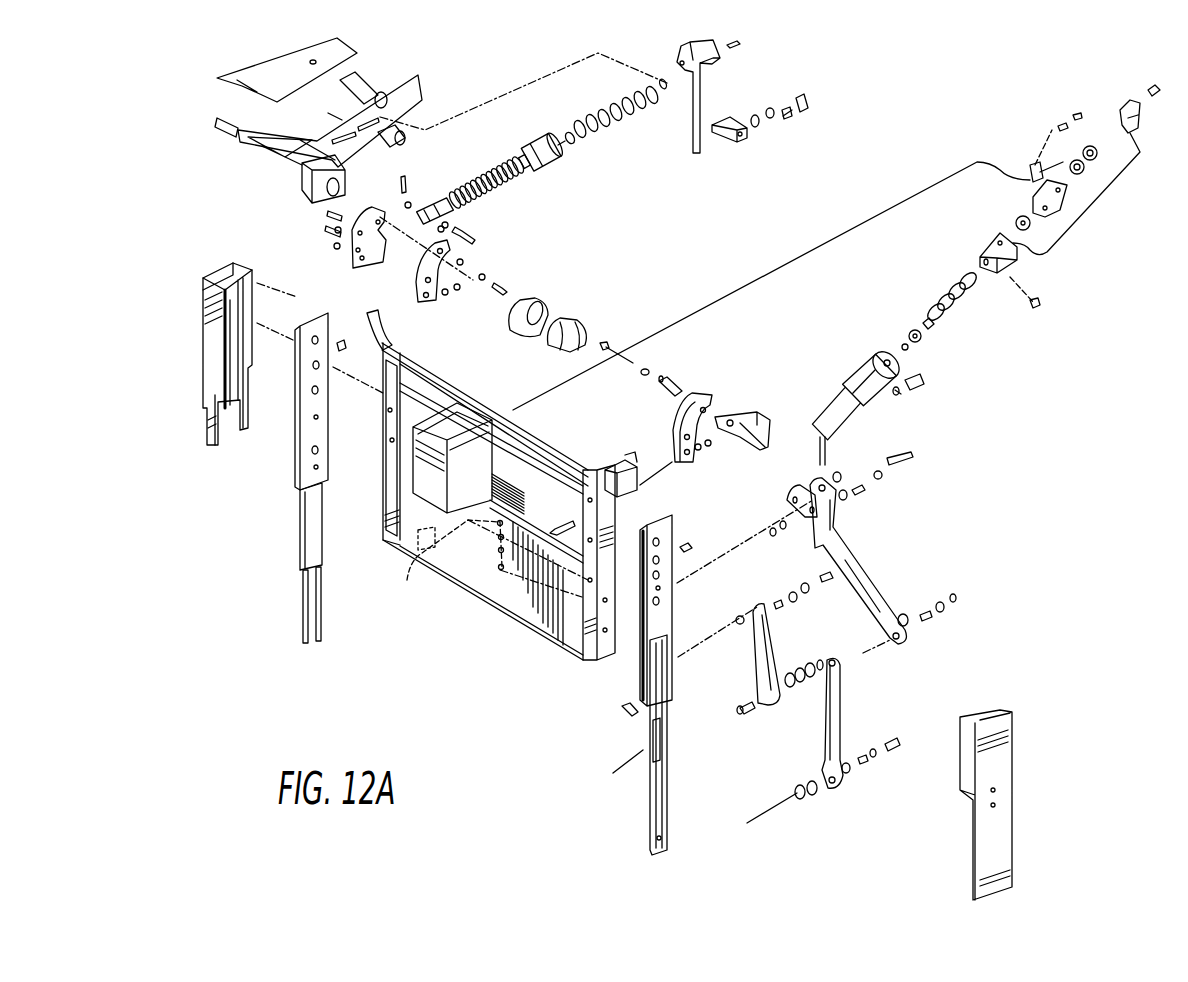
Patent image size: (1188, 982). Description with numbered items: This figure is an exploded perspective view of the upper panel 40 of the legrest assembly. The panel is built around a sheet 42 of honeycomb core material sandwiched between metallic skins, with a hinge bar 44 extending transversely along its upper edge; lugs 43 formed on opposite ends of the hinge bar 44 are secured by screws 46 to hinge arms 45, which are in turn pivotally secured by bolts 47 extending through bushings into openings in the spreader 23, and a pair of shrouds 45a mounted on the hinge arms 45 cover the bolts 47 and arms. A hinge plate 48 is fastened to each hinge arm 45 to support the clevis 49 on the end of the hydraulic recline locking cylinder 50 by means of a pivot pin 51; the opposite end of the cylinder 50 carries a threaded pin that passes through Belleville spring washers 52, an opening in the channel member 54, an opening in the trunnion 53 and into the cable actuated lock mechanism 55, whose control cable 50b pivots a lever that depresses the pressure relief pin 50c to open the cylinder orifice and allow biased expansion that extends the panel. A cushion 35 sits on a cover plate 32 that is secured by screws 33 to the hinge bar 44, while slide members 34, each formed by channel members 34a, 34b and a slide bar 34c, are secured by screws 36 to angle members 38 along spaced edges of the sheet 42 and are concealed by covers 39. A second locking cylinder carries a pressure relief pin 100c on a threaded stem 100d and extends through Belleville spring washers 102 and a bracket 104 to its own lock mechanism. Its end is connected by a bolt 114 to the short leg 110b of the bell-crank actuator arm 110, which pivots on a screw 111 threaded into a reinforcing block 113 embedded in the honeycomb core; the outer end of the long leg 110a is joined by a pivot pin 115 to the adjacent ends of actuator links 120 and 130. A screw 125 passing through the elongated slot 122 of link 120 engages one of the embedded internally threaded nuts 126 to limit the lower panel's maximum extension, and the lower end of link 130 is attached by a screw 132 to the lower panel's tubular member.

The spreader 23 is at (293, 150).
The cover plate 32 is at (397, 410).
The screws 33 is at (530, 450).
The slide members 34 is at (675, 687).
The channel member 34a is at (300, 450).
The channel member 34b is at (300, 527).
The slide bar 34c is at (300, 617).
The cushion 35 is at (417, 490).
The screws 36 is at (690, 547).
The angle members 38 is at (393, 523).
The covers 39 is at (213, 330).
The upper panel 40 is at (472, 524).
The sheet 42 is at (503, 592).
The lugs 43 is at (397, 330).
The hinge bar 44 is at (437, 380).
The hinge arms 45 is at (440, 308).
The shrouds 45a is at (567, 323).
The screws 46 is at (340, 343).
The bolts 47 is at (500, 280).
The hinge plate 48 is at (350, 260).
The clevis 49 is at (427, 212).
The hydraulic recline locking cylinder 50 is at (537, 156).
The control cable 50b is at (790, 112).
The pressure relief pin 50c is at (557, 143).
The pivot pin 51 is at (477, 232).
The Belleville spring washers 52 is at (630, 129).
The trunnion 53 is at (714, 120).
The channel member 54 is at (693, 53).
The cable actuated lock mechanism 55 is at (800, 98).
The pressure relief pin 100c is at (905, 345).
The threaded stem 100d is at (900, 355).
The Belleville spring washers 102 is at (941, 288).
The bracket 104 is at (987, 253).
The actuator arm 110 is at (857, 550).
The long leg 110a is at (860, 583).
The short leg 110b is at (830, 503).
The screw 111 is at (912, 458).
The reinforcing block 113 is at (407, 580).
The bolt 114 is at (918, 382).
The pivot pin 115 is at (757, 713).
The actuator link 120 is at (770, 654).
The elongated slot 122 is at (757, 650).
The screw 125 is at (822, 577).
The internally threaded nuts 126 is at (498, 558).
The actuator link 130 is at (845, 700).
The screw 132 is at (893, 747).